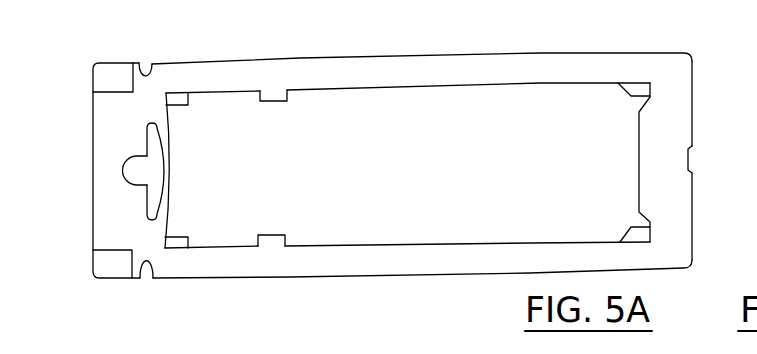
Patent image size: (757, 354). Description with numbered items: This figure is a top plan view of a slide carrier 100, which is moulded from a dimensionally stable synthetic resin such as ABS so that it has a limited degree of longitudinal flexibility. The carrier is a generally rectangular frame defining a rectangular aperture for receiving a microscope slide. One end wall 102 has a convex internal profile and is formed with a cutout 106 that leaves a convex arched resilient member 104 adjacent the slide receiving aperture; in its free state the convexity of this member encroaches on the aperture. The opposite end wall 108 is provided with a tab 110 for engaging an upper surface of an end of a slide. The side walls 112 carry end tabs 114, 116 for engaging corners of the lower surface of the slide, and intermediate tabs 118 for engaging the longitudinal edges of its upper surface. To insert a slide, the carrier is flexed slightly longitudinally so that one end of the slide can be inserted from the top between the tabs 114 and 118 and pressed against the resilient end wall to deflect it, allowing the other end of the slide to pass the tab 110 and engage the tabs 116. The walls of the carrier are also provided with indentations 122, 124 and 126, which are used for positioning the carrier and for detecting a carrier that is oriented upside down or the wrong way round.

The slide carrier 100 is at (490, 283).
The end wall 102 is at (100, 222).
The convex arched resilient member 104 is at (170, 172).
The cutout 106 is at (125, 175).
The opposite end wall 108 is at (667, 128).
The tab 110 is at (638, 158).
The side walls 112 is at (467, 70).
The end tabs 114 is at (183, 98).
The end tabs 116 is at (620, 88).
The intermediate tabs 118 is at (285, 103).
The indentation 122 is at (100, 73).
The indentation 124 is at (148, 73).
The indentation 126 is at (692, 158).